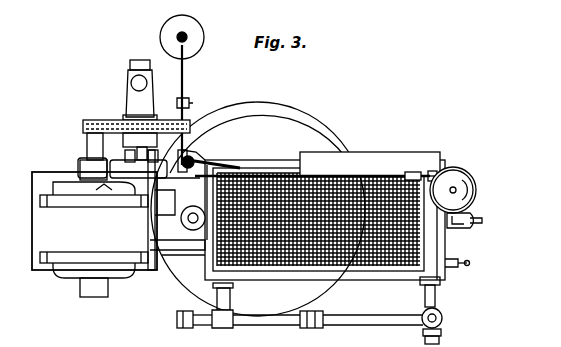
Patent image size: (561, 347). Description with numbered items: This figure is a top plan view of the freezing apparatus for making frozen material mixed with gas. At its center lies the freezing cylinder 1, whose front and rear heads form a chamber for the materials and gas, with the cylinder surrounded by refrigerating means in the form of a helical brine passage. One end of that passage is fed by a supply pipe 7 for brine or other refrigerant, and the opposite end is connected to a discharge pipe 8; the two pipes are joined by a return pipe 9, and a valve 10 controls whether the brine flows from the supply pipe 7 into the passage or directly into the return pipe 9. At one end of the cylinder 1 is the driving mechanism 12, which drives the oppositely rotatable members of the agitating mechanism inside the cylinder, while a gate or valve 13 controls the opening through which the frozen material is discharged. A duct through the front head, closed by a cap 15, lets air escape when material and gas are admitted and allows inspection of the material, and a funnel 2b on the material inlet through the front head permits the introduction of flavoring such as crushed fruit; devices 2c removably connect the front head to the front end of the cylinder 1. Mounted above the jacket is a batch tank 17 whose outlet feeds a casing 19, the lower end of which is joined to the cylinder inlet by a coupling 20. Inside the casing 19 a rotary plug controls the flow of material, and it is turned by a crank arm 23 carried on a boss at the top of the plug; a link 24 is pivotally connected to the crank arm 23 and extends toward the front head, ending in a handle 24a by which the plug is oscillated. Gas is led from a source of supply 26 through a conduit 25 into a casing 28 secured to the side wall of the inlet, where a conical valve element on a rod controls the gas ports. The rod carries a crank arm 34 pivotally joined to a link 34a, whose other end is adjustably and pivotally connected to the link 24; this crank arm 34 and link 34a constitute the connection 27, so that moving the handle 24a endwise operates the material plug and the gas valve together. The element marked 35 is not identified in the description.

The freezing cylinder 1 is at (405, 154).
The funnel 2b is at (478, 186).
The devices for removably connecting the head 2c is at (469, 265).
The supply pipe 7 is at (440, 298).
The discharge pipe 8 is at (232, 300).
The return pipe 9 is at (358, 320).
The valve 10 is at (445, 318).
The driving mechanism 12 is at (57, 270).
The gate or valve 13 is at (473, 228).
The cap 15 is at (479, 214).
The batch tank 17 is at (352, 185).
The casing 19 is at (198, 232).
The coupling 20 is at (195, 218).
The crank arm 23 is at (177, 207).
The link 24 is at (341, 171).
The handle 24a is at (438, 158).
The conduit for gas 25 is at (183, 72).
The source of supply 26 is at (195, 32).
The connection 27 is at (175, 186).
The casing 28 is at (157, 178).
The crank arm 34 is at (228, 147).
The link 34a is at (228, 154).
The hub 35 is at (194, 145).